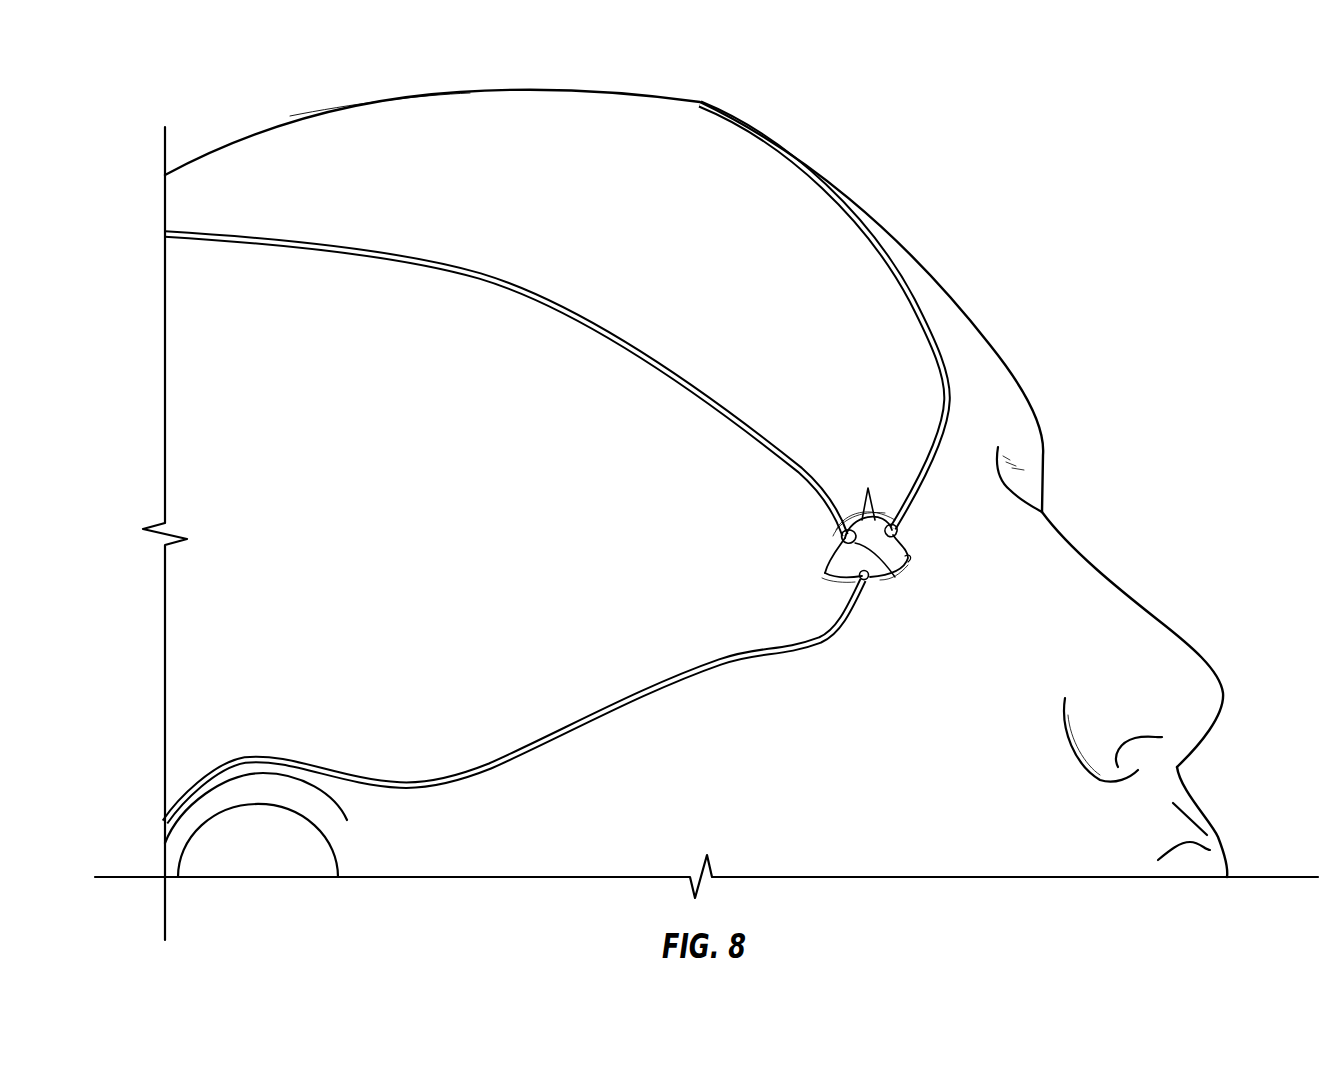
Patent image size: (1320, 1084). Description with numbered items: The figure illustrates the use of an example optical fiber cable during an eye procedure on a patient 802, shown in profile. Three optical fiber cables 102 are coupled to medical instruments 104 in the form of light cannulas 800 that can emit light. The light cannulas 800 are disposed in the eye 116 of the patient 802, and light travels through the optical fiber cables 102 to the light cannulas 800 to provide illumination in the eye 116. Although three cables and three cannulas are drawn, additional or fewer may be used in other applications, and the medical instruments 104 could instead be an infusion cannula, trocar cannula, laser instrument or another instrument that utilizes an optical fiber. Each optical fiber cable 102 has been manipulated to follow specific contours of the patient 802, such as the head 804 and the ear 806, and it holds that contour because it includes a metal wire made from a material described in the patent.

The optical fiber cable 102 is at (492, 272).
The medical instrument 104 is at (845, 572).
The eye 116 is at (878, 560).
The light cannula 800 is at (865, 570).
The patient 802 is at (940, 266).
The head 804 is at (523, 108).
The ear 806 is at (233, 782).